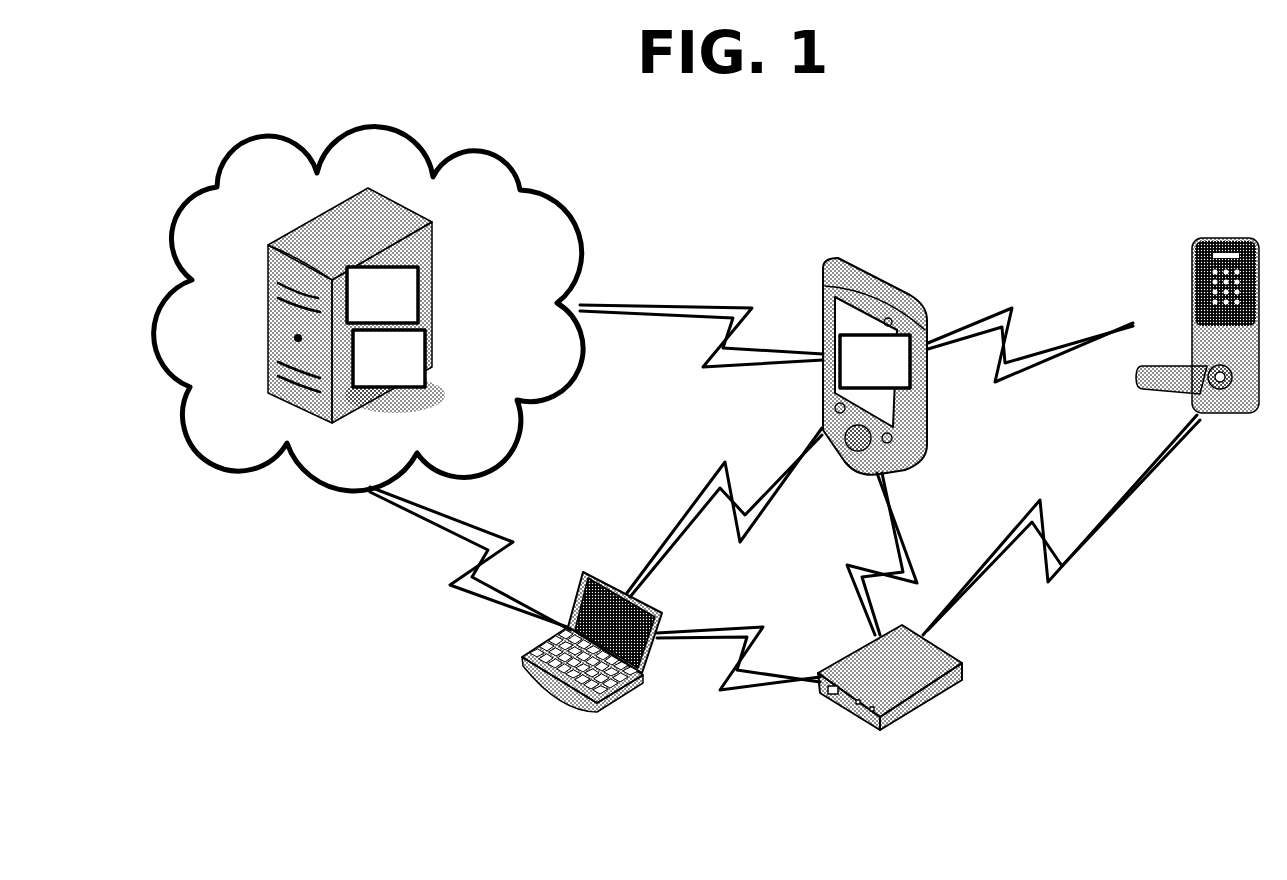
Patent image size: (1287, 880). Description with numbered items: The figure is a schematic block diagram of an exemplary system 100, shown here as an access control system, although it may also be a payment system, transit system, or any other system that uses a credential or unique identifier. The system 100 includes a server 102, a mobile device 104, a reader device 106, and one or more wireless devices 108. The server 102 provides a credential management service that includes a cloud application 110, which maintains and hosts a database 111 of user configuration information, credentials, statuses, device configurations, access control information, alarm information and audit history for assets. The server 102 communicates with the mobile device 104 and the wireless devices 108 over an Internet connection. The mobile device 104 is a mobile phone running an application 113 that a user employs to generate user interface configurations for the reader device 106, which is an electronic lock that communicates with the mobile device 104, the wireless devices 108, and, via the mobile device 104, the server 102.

The system 100 is at (1131, 138).
The server 102 is at (152, 290).
The mobile device 104 is at (805, 405).
The reader device 106 is at (1233, 430).
The wireless devices 108 is at (488, 676).
The cloud application 110 is at (382, 295).
The database 111 is at (389, 358).
The application 113 is at (875, 361).